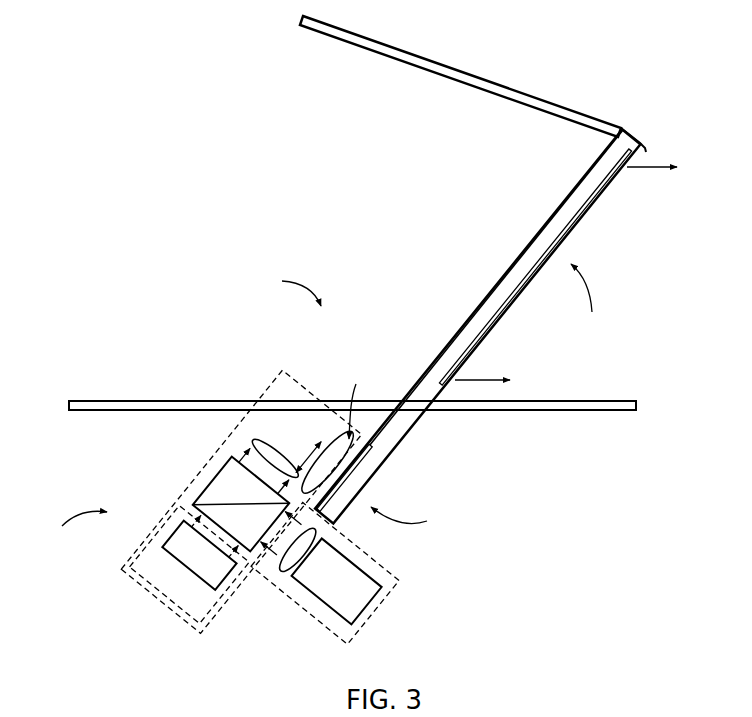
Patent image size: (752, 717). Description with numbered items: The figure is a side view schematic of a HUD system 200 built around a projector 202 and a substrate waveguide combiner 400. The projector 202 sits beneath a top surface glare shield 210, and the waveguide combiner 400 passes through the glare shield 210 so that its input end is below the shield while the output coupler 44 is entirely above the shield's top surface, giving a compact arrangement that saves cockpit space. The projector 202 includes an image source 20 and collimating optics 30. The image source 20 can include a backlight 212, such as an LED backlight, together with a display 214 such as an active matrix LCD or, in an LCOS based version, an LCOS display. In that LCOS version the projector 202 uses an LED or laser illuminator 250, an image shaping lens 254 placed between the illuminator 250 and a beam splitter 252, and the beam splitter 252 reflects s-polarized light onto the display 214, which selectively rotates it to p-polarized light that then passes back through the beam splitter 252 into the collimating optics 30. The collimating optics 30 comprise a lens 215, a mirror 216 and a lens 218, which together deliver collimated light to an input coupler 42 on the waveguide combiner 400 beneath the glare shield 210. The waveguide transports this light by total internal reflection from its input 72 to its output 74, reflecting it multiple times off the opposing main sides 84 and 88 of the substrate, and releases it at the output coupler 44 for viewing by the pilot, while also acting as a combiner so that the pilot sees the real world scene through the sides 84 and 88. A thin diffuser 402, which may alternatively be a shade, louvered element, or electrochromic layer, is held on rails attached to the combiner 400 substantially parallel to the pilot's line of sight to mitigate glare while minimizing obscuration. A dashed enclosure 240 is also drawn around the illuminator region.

The image source 20 is at (230, 488).
The collimating optics 30 is at (273, 384).
The input coupler 42 is at (371, 456).
The output coupler 44 is at (588, 210).
The input 72 is at (411, 518).
The output 74 is at (588, 299).
The main side 84 is at (483, 307).
The main side 88 is at (641, 149).
The HUD system 200 is at (281, 285).
The projector 202 is at (66, 527).
The glare shield 210 is at (125, 399).
The backlight 212 is at (138, 580).
The display 214 is at (176, 532).
The lens 215 is at (246, 446).
The mirror 216 is at (320, 442).
The lens 218 is at (360, 398).
The detector housing 240 is at (398, 588).
The illuminator 250 is at (375, 602).
The beam splitter 252 is at (205, 470).
The image shaping lens 254 is at (285, 578).
The waveguide combiner 400 is at (633, 132).
The diffuser 402 is at (407, 63).